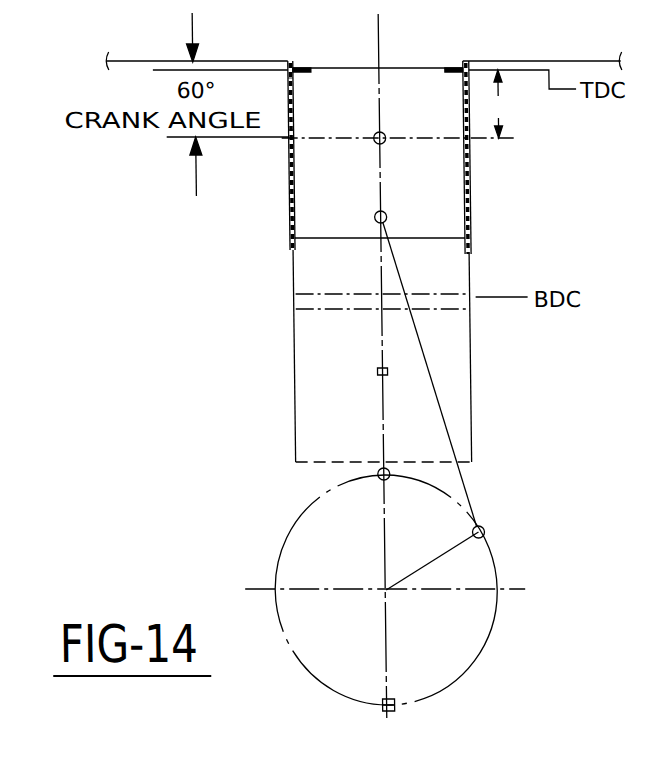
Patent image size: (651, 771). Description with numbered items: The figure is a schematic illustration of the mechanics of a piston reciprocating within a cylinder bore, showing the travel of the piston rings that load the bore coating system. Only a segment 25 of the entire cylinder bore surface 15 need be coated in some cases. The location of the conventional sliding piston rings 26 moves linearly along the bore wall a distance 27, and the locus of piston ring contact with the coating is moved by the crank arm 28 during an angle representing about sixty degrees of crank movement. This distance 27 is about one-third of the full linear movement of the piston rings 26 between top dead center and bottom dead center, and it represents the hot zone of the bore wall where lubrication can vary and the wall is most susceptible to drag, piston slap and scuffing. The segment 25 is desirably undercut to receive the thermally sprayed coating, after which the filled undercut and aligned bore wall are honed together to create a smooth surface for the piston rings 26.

The cylinder bore surface 15 is at (470, 381).
The segment 25 is at (298, 79).
The piston rings 26 is at (452, 67).
The distance 27 is at (504, 104).
The crank arm 28 is at (457, 543).